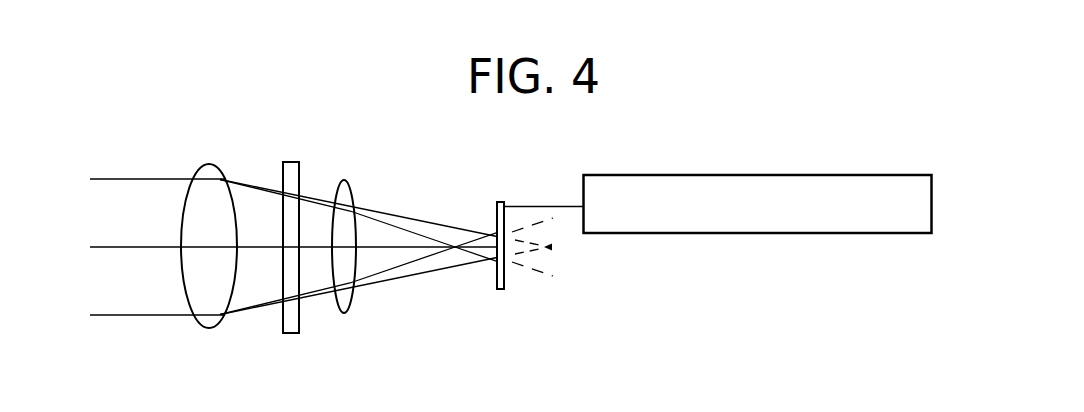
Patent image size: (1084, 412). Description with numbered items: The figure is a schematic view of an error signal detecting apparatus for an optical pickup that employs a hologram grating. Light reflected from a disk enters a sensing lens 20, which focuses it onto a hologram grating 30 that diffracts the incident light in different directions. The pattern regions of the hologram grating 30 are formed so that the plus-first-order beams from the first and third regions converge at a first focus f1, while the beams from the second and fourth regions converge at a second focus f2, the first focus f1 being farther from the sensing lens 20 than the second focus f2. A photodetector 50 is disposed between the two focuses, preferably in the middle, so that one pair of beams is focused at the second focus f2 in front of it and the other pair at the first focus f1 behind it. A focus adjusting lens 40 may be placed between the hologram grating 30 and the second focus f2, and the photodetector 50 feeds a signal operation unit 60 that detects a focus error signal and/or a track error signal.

The sensing lens 20 is at (207, 328).
The hologram grating 30 is at (291, 333).
The focus adjusting lens 40 is at (344, 313).
The photodetector 50 is at (501, 202).
The signal operation unit 60 is at (756, 175).
The first focus f1 is at (552, 247).
The second focus f2 is at (455, 248).